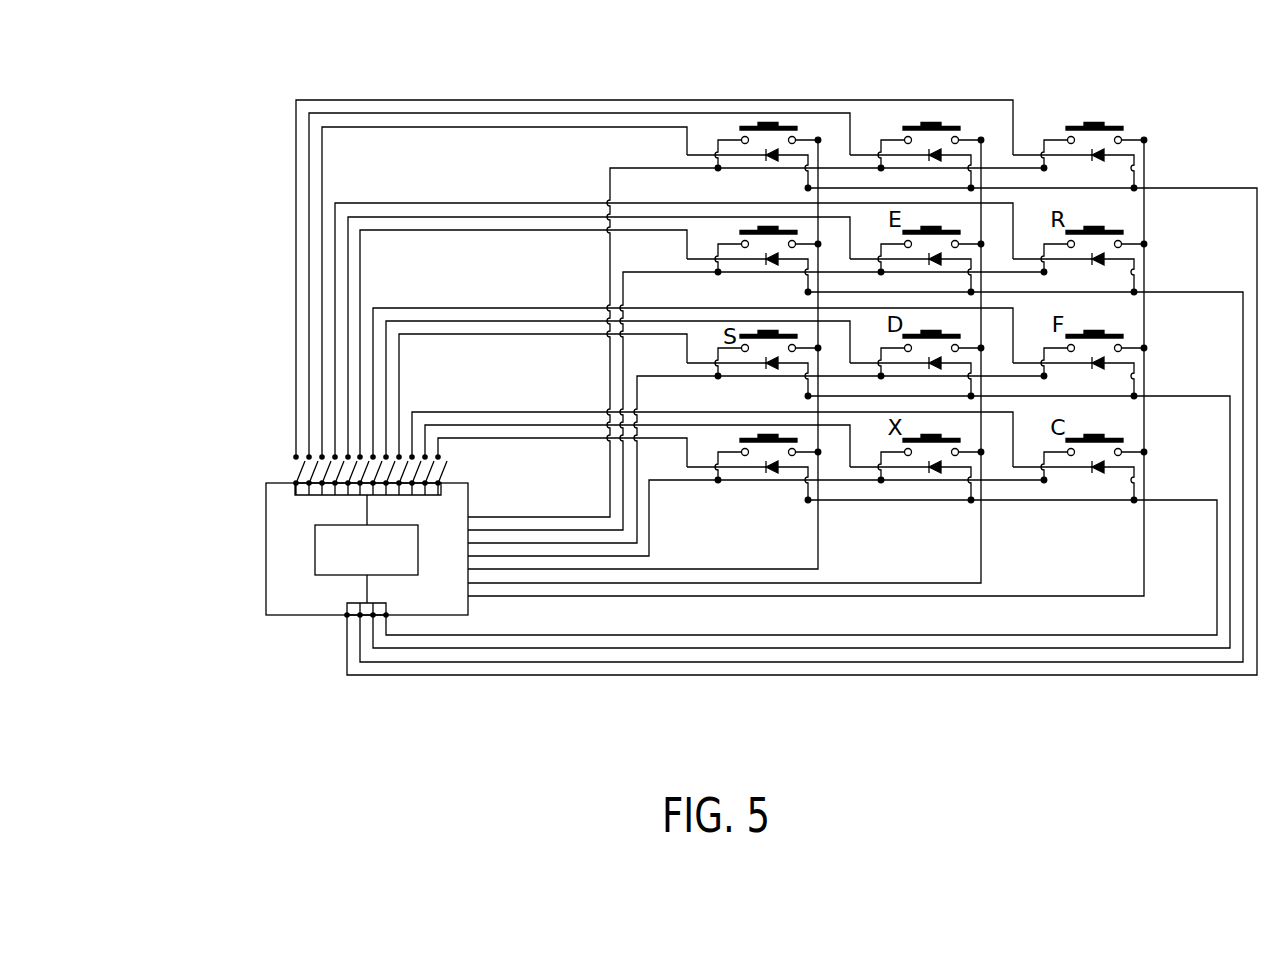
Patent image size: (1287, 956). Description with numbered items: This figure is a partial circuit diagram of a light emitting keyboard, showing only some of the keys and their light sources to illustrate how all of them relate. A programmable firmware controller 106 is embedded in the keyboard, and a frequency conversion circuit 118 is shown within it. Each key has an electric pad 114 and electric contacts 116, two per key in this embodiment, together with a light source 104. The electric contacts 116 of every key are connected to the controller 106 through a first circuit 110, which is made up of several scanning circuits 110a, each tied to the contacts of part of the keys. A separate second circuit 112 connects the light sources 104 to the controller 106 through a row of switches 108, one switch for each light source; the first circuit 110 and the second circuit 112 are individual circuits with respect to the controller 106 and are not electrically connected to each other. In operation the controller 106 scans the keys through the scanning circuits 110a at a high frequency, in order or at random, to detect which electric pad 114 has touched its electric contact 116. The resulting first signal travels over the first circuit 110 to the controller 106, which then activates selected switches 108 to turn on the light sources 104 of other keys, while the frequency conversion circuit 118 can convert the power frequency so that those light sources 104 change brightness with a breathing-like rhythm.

The light source 104 is at (766, 153).
The controller 106 is at (266, 563).
The switches 108 is at (288, 465).
The first circuit 110 is at (700, 602).
The scanning circuit 110a is at (818, 553).
The second circuit 112 is at (458, 185).
The electric pad 114 is at (765, 124).
The electric contact 116 is at (797, 138).
The frequency conversion circuit 118 is at (315, 539).